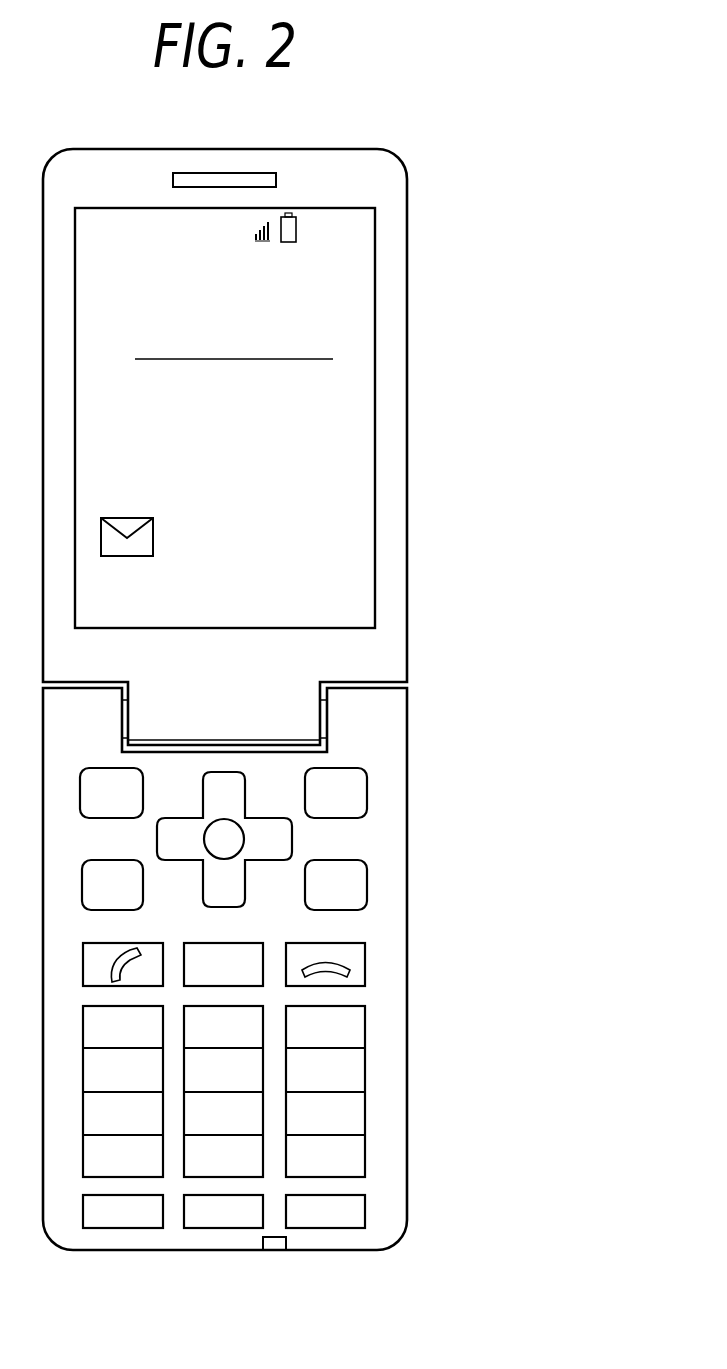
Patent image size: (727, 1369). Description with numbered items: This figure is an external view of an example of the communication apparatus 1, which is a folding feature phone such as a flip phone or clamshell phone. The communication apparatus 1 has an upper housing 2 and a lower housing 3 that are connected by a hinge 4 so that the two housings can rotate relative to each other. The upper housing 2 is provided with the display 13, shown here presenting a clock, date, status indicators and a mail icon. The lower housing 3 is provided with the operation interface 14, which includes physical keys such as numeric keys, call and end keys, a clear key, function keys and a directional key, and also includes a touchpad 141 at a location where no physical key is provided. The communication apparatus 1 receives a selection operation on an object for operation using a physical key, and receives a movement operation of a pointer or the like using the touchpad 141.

The communication apparatus 1 is at (492, 217).
The upper housing 2 is at (320, 148).
The lower housing 3 is at (341, 1251).
The hinge 4 is at (327, 718).
The display 13 is at (375, 397).
The operation interface 14 is at (433, 767).
The touchpad 141 is at (62, 1060).